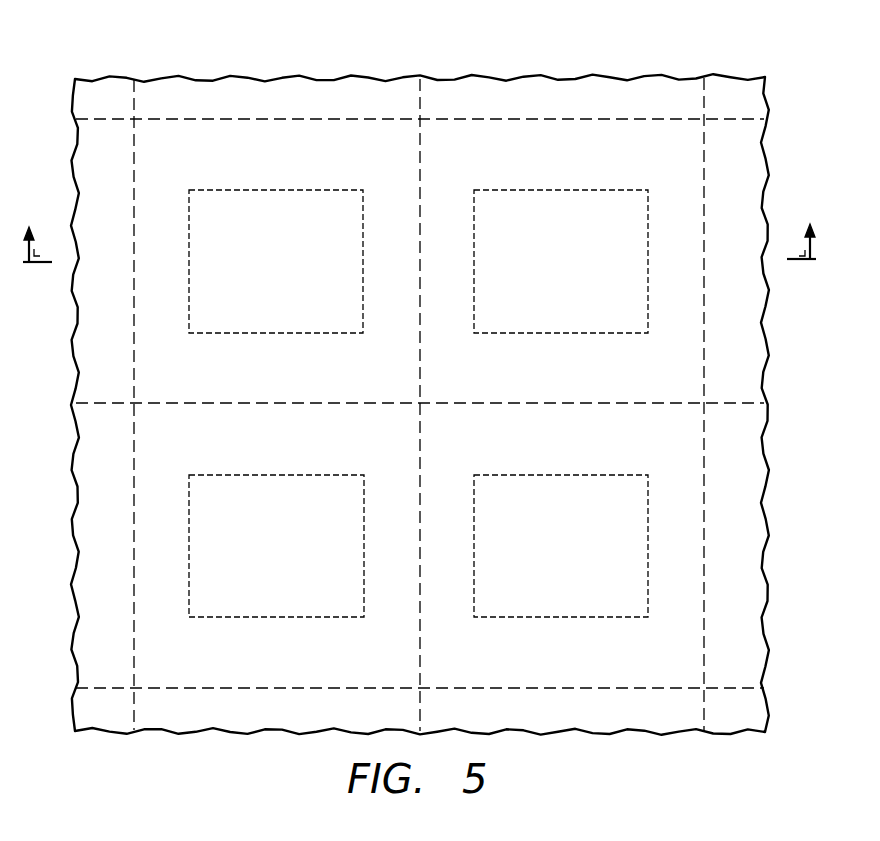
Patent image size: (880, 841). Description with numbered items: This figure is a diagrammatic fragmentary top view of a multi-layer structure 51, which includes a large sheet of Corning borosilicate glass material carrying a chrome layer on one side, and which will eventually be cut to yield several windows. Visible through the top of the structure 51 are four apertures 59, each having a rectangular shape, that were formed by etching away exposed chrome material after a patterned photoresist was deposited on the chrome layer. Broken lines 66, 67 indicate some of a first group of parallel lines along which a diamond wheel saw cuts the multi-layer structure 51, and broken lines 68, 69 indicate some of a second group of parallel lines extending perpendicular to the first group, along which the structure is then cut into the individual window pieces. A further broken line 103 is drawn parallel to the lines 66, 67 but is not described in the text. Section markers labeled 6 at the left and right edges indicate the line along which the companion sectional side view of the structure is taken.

The multi-layer structure 51 is at (276, 68).
The apertures 59 is at (363, 256).
The cutting line of first group 66 is at (135, 362).
The cutting line of first group 67 is at (421, 644).
The cutting line of second group 68 is at (284, 121).
The cutting line of second group 69 is at (556, 405).
The column saw street 103 is at (703, 363).
The section line 6 is at (419, 227).